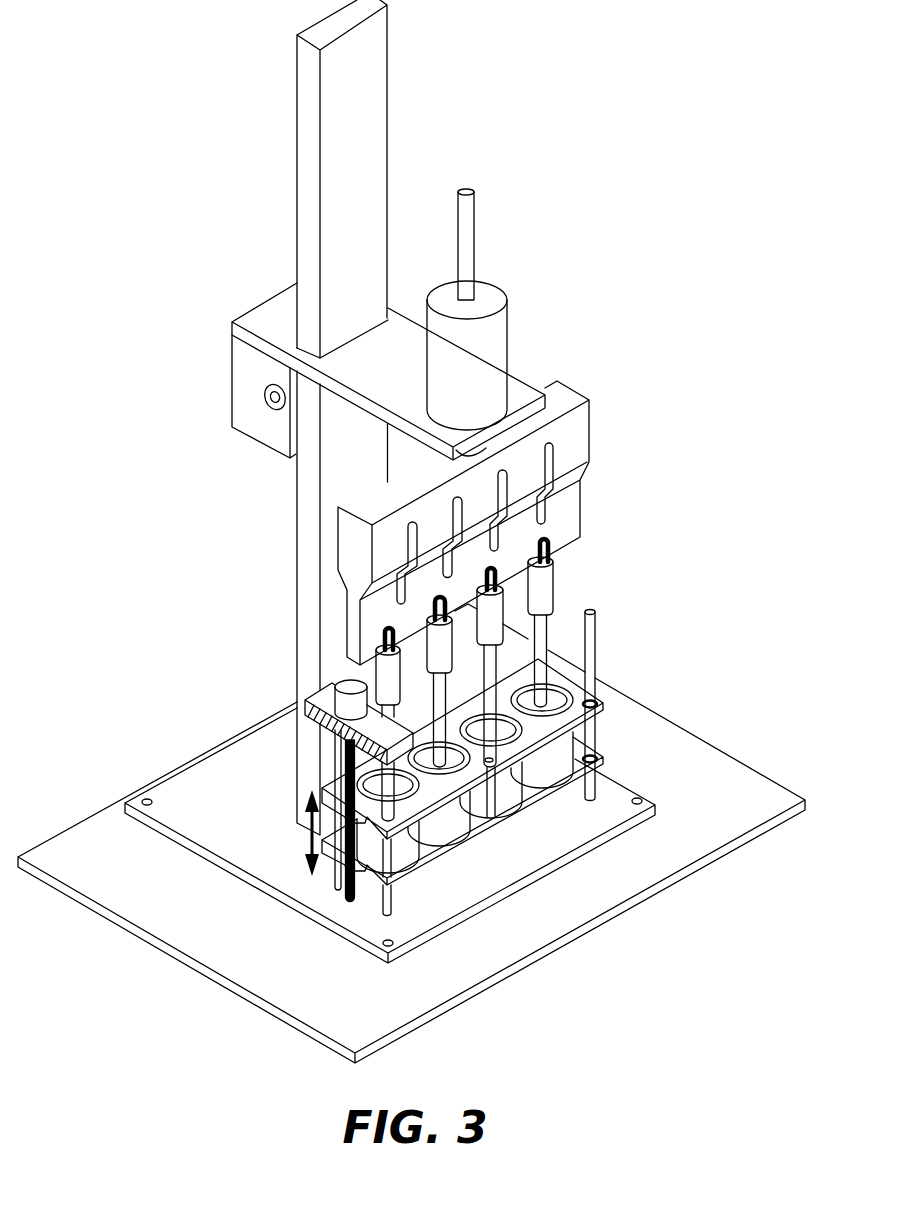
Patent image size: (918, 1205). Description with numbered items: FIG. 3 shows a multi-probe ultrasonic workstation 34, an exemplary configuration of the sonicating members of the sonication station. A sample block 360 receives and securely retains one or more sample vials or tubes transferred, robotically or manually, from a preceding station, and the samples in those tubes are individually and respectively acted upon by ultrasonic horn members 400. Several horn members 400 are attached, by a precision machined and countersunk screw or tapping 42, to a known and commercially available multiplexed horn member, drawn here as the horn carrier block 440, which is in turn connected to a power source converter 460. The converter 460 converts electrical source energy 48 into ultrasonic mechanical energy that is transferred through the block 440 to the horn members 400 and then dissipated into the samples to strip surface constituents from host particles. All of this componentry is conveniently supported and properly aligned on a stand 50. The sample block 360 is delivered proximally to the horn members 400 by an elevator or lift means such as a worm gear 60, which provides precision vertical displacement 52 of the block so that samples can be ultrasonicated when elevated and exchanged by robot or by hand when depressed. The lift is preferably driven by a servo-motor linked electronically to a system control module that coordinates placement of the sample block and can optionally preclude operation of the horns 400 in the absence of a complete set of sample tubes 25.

The multi-probe ultrasonic workstation 34 is at (542, 128).
The stand 50 is at (326, 187).
The electrical source energy 48 is at (472, 248).
The power source converter 460 is at (497, 342).
The probe carrier block 440 is at (583, 440).
The countersunk screw or tapping 42 is at (551, 552).
The ultrasonic horn members 400 is at (547, 647).
The worm gear 60 is at (343, 773).
The vertical displacement 52 is at (312, 835).
The sample block 360 is at (557, 752).
The sample tubes 25 is at (543, 797).